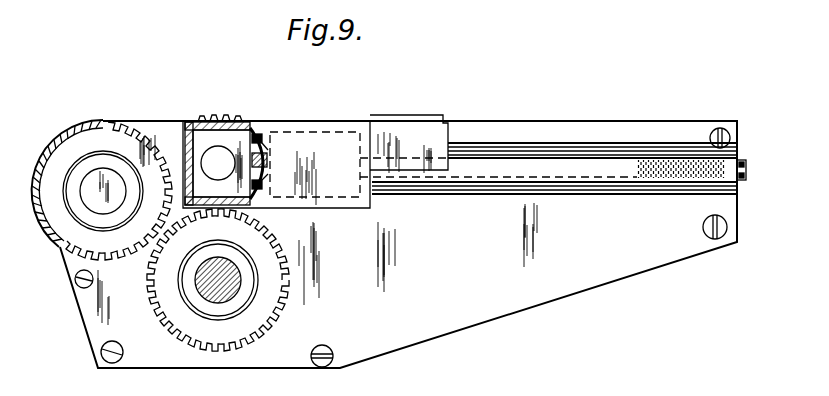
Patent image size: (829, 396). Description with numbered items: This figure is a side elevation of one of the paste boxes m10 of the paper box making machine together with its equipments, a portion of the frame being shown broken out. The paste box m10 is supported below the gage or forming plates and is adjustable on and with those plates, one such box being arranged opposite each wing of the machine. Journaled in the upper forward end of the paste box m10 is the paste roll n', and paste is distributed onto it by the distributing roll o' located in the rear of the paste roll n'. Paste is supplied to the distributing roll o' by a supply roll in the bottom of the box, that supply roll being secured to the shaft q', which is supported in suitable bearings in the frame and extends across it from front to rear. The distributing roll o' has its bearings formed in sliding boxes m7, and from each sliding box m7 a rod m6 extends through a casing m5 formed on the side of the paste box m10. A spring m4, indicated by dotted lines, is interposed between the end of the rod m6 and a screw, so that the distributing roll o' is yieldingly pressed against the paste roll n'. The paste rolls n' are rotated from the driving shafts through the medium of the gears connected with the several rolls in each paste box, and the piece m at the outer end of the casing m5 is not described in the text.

The paste roll n' is at (117, 173).
The distributing roll o' is at (208, 101).
The shaft q' is at (218, 284).
The sliding boxes m7 is at (244, 144).
The rod m6 is at (264, 168).
The casing m5 is at (503, 157).
The spring m4 is at (689, 143).
The end piece m is at (742, 164).
The paste box m10 is at (384, 244).